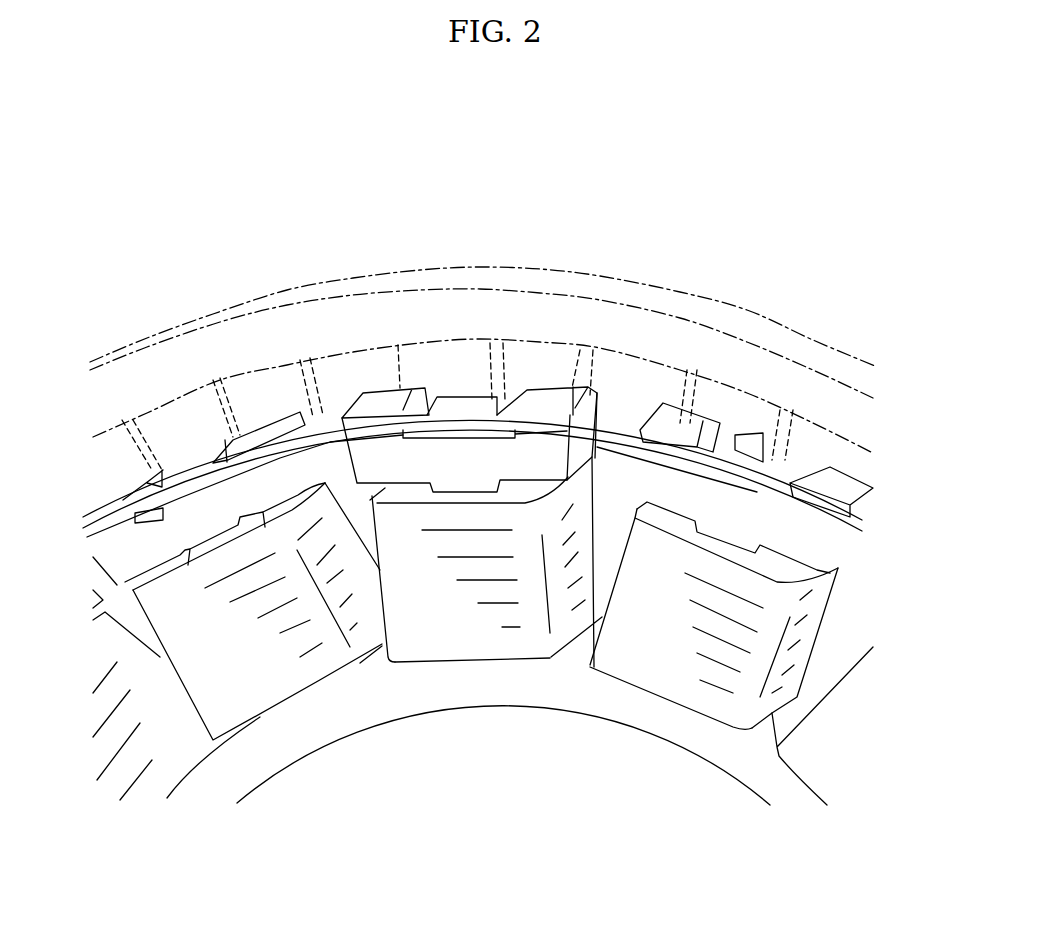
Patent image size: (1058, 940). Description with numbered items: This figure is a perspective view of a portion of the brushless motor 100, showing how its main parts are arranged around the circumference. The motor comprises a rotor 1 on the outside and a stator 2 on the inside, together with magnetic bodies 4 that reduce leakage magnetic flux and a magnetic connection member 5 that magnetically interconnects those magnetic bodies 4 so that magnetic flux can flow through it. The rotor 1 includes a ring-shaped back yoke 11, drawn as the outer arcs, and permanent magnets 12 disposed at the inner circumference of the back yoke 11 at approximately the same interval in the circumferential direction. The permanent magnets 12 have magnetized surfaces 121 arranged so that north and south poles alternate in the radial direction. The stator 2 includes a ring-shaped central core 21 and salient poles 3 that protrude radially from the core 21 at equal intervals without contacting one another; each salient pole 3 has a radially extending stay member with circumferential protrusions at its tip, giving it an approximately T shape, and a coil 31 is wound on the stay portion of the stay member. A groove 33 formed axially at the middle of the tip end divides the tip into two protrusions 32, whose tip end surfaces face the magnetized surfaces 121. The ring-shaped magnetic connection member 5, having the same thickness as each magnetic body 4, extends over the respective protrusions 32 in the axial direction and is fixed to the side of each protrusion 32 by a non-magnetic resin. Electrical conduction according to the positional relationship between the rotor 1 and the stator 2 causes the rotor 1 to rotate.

The brushless motor 100 is at (622, 197).
The rotor 1 is at (523, 218).
The back yoke 11 is at (700, 293).
The permanent magnets 12 is at (354, 343).
The magnetized surfaces 121 is at (317, 410).
The magnetic connection member 5 is at (865, 527).
The magnetic bodies 4 is at (472, 438).
The protrusions 32 is at (411, 400).
The groove 33 is at (507, 400).
The stator 2 is at (472, 748).
The core 21 is at (590, 716).
The salient poles 3 is at (444, 675).
The coil 31 is at (498, 664).